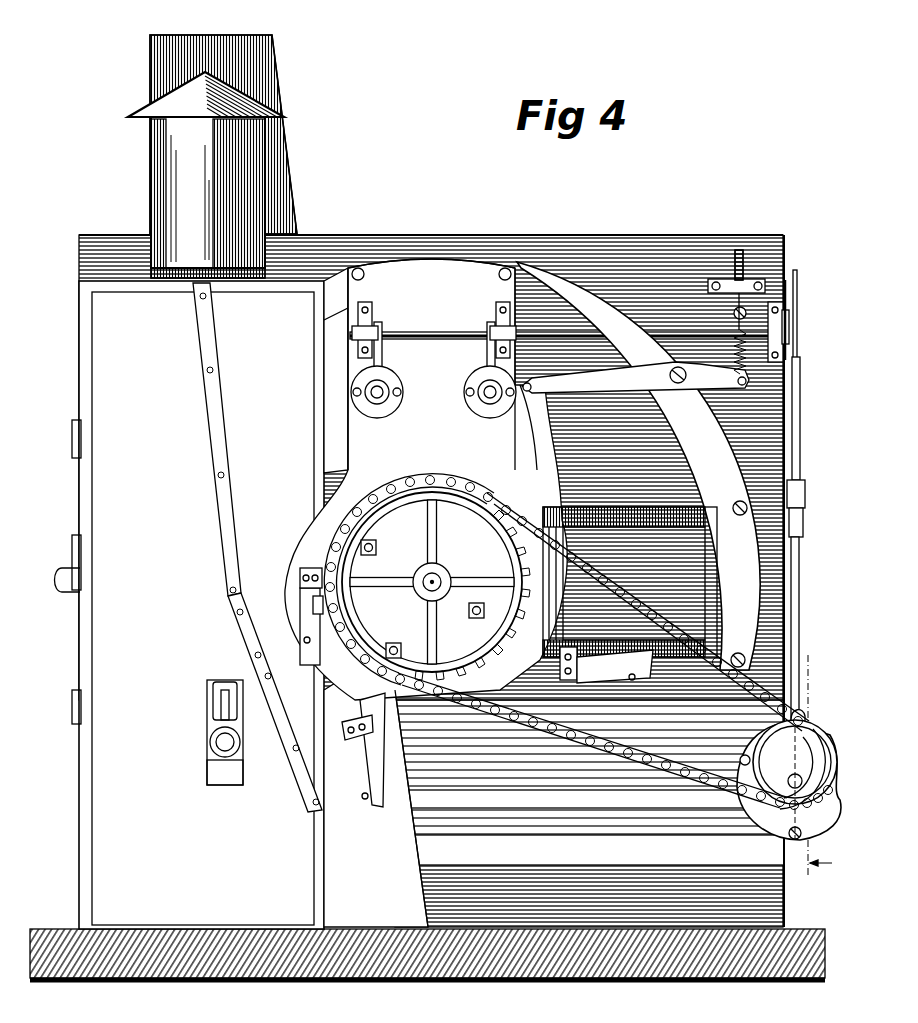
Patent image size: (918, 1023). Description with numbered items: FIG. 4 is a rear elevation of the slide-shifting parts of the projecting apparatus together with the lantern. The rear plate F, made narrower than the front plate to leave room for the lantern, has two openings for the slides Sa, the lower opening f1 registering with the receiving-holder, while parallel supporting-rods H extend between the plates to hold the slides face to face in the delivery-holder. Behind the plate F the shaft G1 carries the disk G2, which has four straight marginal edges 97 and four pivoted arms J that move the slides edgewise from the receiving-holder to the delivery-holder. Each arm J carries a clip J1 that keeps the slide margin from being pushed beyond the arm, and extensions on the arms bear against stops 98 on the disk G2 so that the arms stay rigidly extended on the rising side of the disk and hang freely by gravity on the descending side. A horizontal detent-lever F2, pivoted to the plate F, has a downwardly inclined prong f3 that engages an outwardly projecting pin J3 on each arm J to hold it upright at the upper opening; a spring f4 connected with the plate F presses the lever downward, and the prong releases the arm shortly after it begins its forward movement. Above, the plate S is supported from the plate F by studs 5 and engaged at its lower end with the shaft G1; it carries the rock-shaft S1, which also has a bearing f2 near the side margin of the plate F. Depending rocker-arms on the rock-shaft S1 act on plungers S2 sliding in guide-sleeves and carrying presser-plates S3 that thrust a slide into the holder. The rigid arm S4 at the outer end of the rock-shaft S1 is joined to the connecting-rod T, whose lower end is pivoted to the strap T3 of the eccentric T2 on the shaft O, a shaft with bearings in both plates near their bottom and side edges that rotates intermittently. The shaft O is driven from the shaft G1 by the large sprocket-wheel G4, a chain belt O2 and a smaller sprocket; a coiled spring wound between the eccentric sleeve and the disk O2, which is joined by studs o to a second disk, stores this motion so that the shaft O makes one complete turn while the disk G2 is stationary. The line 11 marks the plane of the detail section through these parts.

The rear plate F is at (686, 238).
The supporting-rods H is at (190, 605).
The plate S is at (487, 304).
The studs 5 is at (360, 270).
The rock-shaft S1 is at (434, 332).
The plungers S2 is at (388, 400).
The presser-plates S3 is at (694, 325).
The rigid arm S4 is at (790, 296).
The slides Sa is at (630, 582).
The lowermost opening f1 is at (628, 520).
The bearing f2 is at (801, 350).
The inclined prong f3 is at (528, 382).
The spring f4 is at (732, 352).
The detent-lever F2 is at (628, 386).
The arms J is at (538, 450).
The clips J1 is at (298, 572).
The pin J3 is at (304, 640).
The connecting-rod T is at (800, 468).
The eccentric T2 is at (798, 783).
The eccentric strap T3 is at (808, 722).
The shaft O is at (792, 778).
The disk O2 is at (772, 816).
The studs o is at (740, 758).
The section line 11 is at (811, 760).
The straight edges 97 is at (540, 520).
The stops 98 is at (422, 599).
The shaft G1 is at (424, 588).
The disk G2 is at (440, 607).
The sprocket-wheel G4 is at (508, 522).